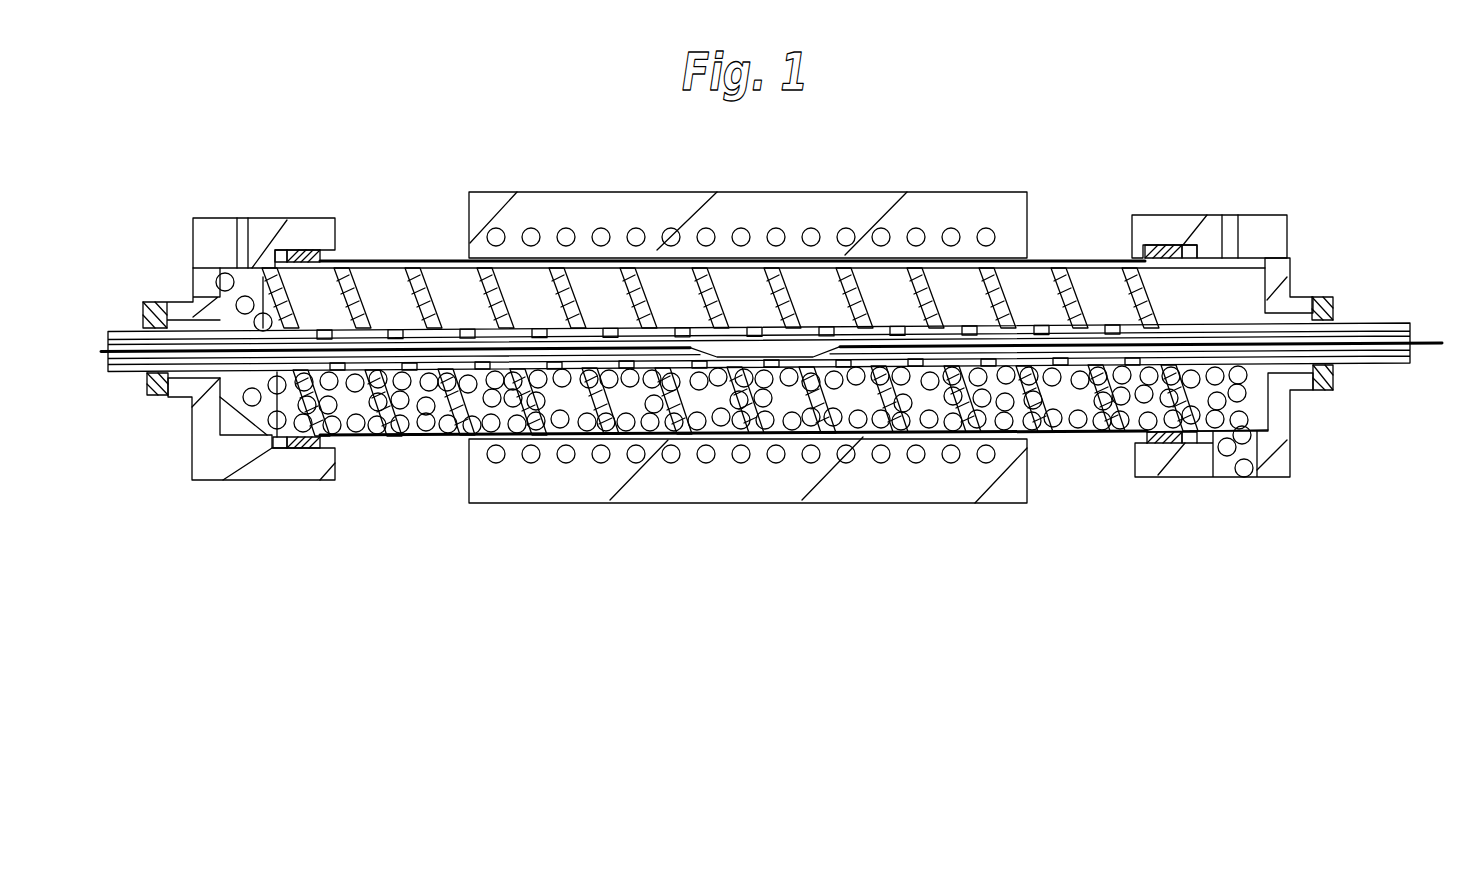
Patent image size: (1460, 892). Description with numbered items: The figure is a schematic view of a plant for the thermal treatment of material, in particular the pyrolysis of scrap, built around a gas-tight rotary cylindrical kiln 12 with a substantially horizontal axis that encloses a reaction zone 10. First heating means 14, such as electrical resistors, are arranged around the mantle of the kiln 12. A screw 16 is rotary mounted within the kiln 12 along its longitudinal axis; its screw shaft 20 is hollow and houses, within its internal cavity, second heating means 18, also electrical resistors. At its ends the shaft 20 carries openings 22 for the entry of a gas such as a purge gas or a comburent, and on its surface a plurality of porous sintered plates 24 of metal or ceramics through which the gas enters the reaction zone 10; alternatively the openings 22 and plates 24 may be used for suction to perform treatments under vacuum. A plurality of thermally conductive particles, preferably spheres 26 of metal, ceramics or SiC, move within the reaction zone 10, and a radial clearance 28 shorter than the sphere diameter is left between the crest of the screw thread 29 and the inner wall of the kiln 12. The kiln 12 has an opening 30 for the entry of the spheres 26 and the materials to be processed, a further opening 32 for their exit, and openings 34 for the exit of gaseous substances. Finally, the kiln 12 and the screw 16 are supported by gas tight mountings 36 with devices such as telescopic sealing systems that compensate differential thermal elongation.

The reaction zone 10 is at (383, 434).
The rotary cylindrical kiln 12 is at (392, 259).
The first heating means 14 is at (708, 455).
The screw 16 is at (1359, 363).
The second heating means 18 is at (775, 395).
The screw shaft 20 is at (133, 372).
The openings 22 is at (95, 375).
The porous sintered plates 24 is at (824, 328).
The spheres 26 is at (1253, 480).
The radial clearance 28 is at (1007, 263).
The screw thread 29 is at (1082, 287).
The opening 30 is at (193, 280).
The further opening 32 is at (1222, 478).
The openings 34 is at (244, 220).
The gas tight mountings 36 is at (208, 230).